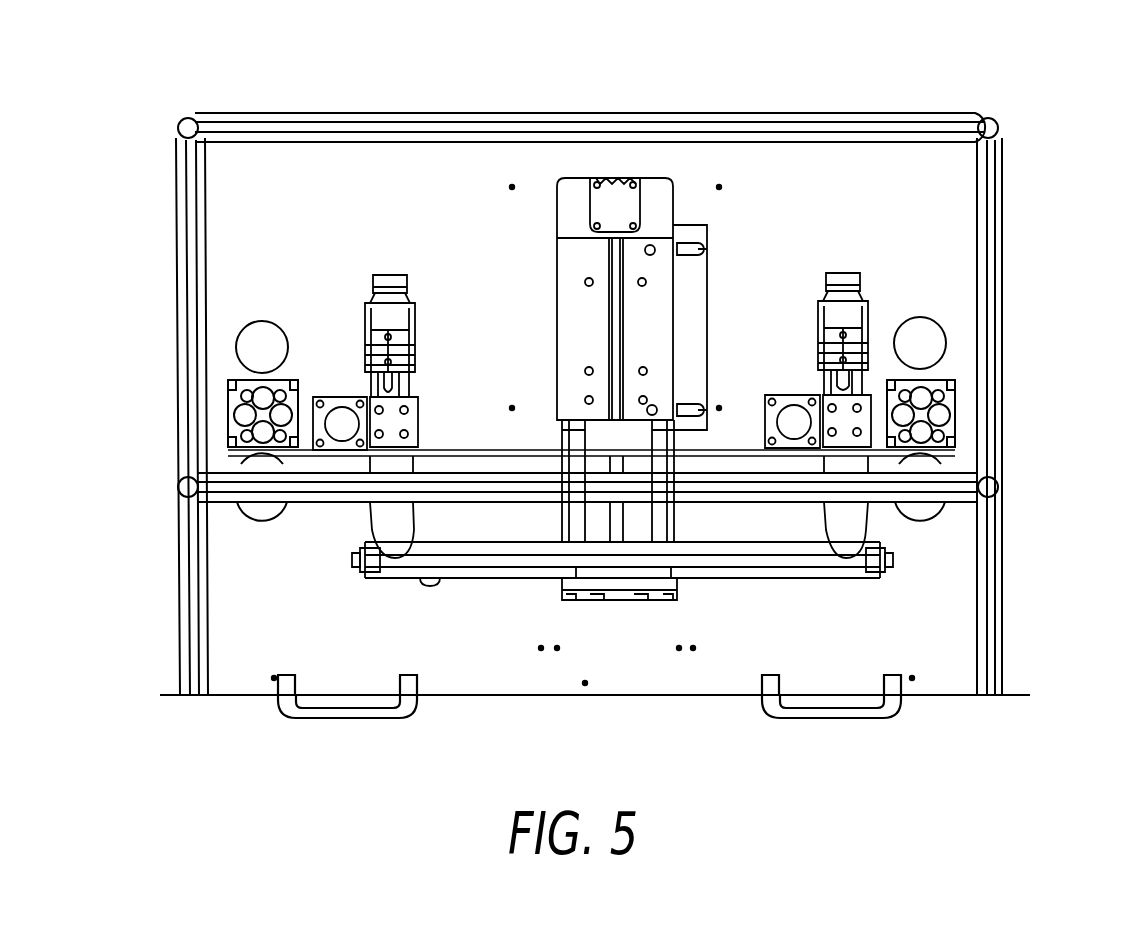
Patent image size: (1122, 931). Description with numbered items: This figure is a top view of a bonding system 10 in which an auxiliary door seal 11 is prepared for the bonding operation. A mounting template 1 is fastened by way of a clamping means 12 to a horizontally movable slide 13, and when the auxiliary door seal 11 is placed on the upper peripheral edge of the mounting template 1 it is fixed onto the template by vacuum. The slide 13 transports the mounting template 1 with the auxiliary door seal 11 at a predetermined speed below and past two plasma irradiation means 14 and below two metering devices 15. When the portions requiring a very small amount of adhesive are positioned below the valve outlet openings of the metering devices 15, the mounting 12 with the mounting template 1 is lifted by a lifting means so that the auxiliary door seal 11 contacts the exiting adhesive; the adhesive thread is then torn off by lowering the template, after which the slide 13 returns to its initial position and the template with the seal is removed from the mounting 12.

The mounting template 1 is at (510, 575).
The bonding system 10 is at (1030, 320).
The auxiliary door seal 11 is at (447, 573).
The clamping means 12 is at (628, 583).
The horizontally movable slide 13 is at (570, 438).
The plasma irradiation means 14 is at (388, 528).
The metering devices 15 is at (366, 393).